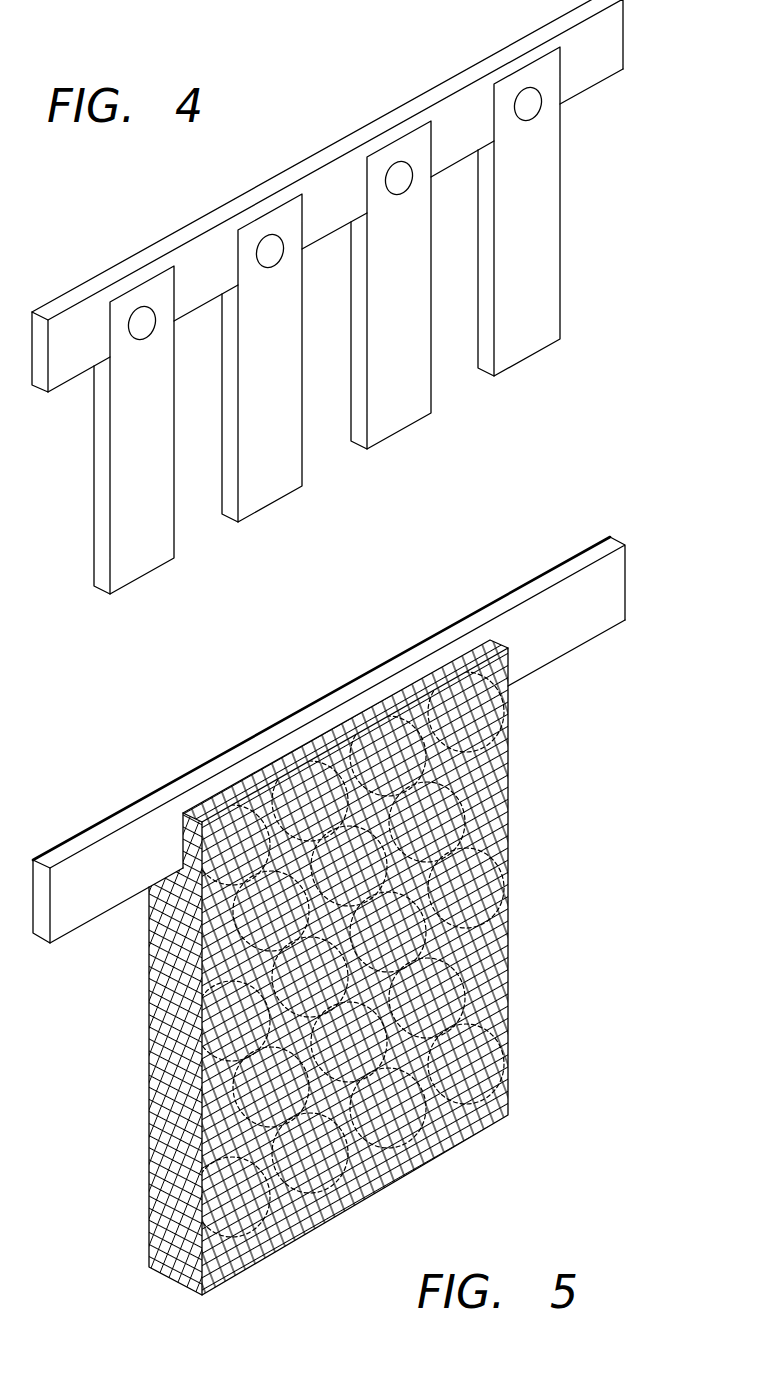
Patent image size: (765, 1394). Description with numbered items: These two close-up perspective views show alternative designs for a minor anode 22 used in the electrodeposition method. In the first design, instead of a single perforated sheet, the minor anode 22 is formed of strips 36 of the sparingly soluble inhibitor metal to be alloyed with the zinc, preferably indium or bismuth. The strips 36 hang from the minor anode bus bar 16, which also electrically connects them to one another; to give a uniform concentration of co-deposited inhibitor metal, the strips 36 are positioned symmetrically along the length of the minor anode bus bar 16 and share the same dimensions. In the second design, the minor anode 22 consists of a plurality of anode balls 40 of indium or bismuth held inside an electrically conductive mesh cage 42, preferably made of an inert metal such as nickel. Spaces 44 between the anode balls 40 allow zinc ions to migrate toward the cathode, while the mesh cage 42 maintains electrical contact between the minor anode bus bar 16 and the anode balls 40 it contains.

In FIG. 4, the minor anode bus bar 16 is at (613, 38).
In FIG. 5, the minor anode bus bar 16 is at (613, 590).
In FIG. 4, the minor anode 22 is at (358, 297).
In FIG. 5, the minor anode 22 is at (360, 916).
In FIG. 4, the strips 36 is at (256, 505).
In FIG. 5, the anode balls 40 is at (149, 990).
In FIG. 5, the electrically conductive mesh cage 42 is at (342, 967).
In FIG. 5, the spaces 44 is at (466, 797).